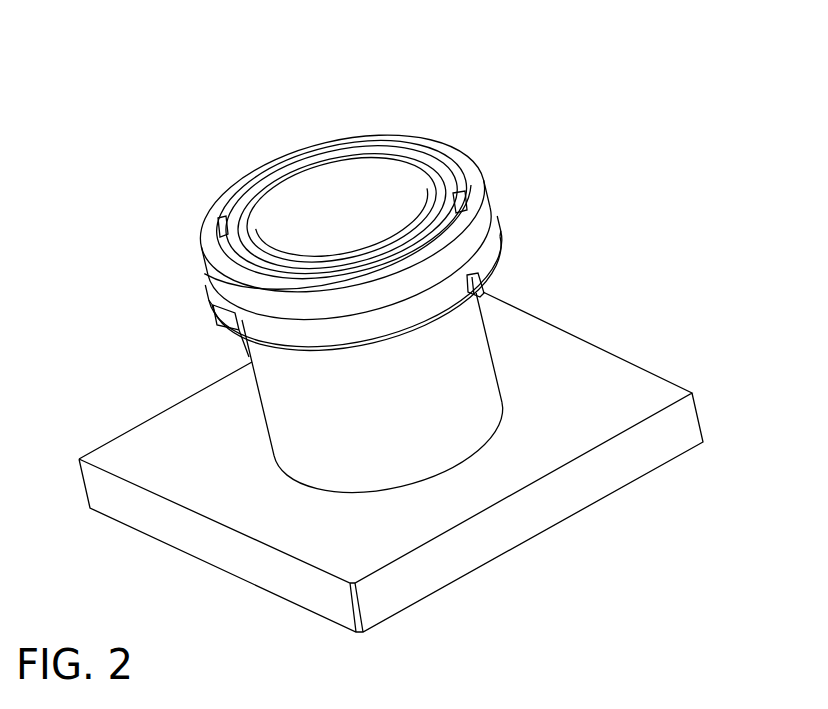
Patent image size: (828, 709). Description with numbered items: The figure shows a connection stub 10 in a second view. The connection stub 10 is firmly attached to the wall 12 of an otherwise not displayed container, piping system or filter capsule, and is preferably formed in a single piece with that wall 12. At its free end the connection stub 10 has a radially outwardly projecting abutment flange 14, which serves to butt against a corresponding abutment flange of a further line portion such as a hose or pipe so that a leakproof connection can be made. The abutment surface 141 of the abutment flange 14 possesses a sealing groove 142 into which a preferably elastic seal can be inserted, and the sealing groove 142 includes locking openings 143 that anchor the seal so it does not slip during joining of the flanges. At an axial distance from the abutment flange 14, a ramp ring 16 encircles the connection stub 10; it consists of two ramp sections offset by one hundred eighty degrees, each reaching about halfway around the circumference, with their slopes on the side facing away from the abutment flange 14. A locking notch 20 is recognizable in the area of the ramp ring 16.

The connection stub 10 is at (178, 168).
The wall 12 is at (215, 497).
The abutment flange 14 is at (204, 243).
The abutment surface 141 is at (313, 143).
The sealing groove 142 is at (397, 150).
The locking openings 143 is at (448, 167).
The ramp ring 16 is at (484, 237).
The locking notch 20 is at (473, 285).